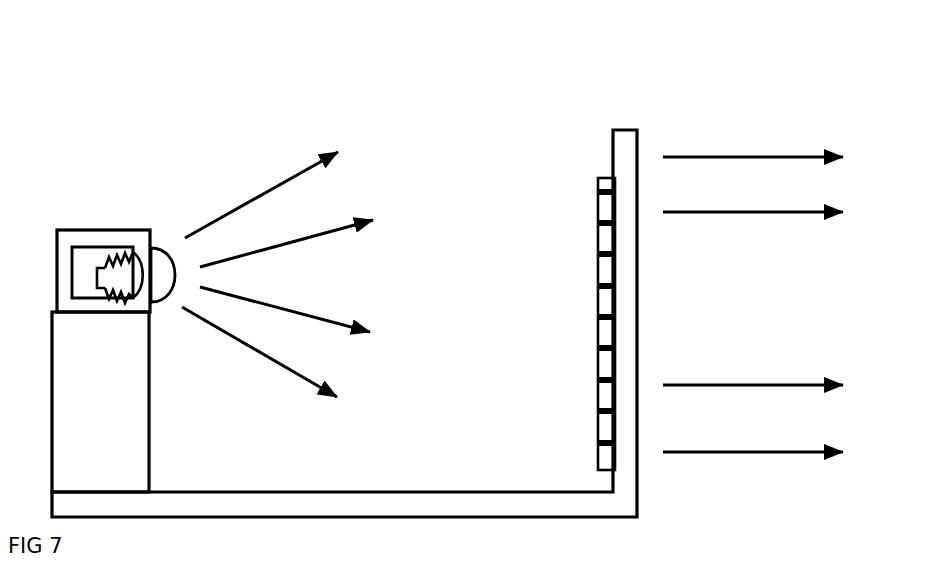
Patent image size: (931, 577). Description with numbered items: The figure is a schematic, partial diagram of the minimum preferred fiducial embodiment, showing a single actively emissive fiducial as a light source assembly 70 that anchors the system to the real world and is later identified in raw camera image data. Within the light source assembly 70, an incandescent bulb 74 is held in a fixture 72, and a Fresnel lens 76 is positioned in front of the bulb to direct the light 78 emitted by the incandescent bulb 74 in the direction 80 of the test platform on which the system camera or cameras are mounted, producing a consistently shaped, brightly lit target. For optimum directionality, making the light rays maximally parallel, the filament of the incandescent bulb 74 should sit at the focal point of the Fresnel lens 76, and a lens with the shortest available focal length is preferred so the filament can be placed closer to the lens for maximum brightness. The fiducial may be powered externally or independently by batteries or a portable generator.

The light source assembly 70 is at (391, 81).
The fixture 72 is at (70, 230).
The incandescent bulb 74 is at (165, 237).
The Fresnel lens 76 is at (598, 163).
The light 78 is at (340, 283).
The direction 80 is at (782, 305).